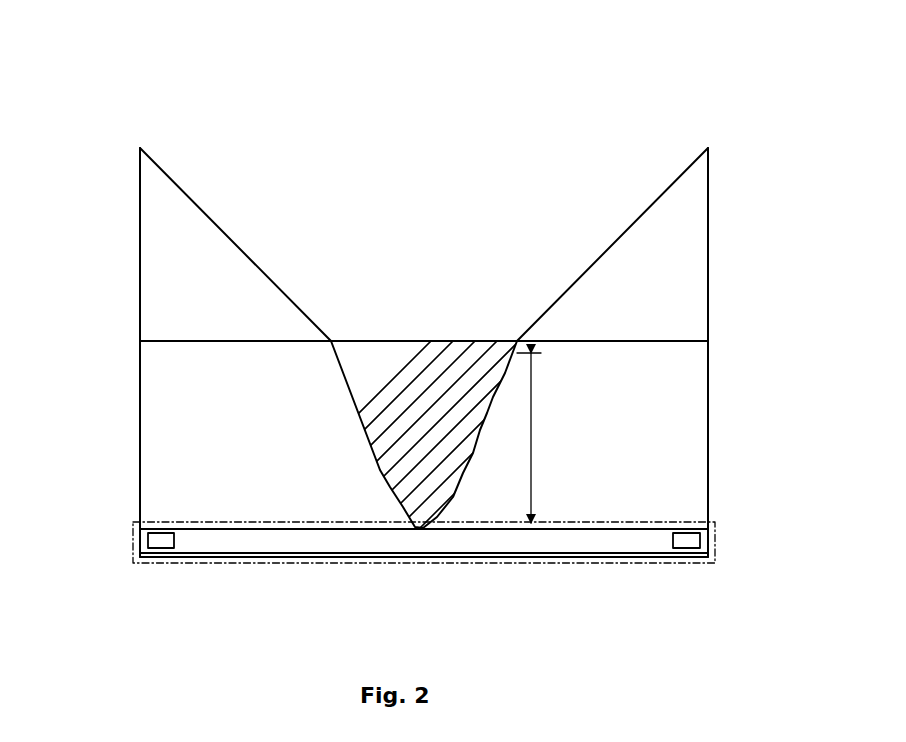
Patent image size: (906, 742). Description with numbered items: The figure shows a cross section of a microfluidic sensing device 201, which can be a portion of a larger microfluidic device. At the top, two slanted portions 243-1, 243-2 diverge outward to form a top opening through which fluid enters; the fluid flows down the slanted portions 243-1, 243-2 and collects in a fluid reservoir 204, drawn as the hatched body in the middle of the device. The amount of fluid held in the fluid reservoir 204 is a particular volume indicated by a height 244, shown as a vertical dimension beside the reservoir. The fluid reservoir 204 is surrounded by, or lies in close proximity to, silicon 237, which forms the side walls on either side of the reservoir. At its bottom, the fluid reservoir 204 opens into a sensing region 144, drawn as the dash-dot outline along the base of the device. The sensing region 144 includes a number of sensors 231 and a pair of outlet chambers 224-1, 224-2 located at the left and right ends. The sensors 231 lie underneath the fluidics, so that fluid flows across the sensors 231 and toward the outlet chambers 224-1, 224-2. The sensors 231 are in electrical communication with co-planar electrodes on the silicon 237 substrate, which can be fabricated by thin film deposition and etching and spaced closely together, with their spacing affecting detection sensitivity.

The microfluidic sensing device 201 is at (128, 73).
The slanted portion 243-1 is at (154, 240).
The slanted portion 243-2 is at (693, 240).
The silicon 237 is at (154, 437).
The fluid reservoir 204 is at (377, 416).
The height 244 is at (533, 440).
The sensors 231 is at (421, 557).
The sensing region 144 is at (716, 535).
The outlet chamber 224-1 is at (160, 542).
The outlet chamber 224-2 is at (686, 542).